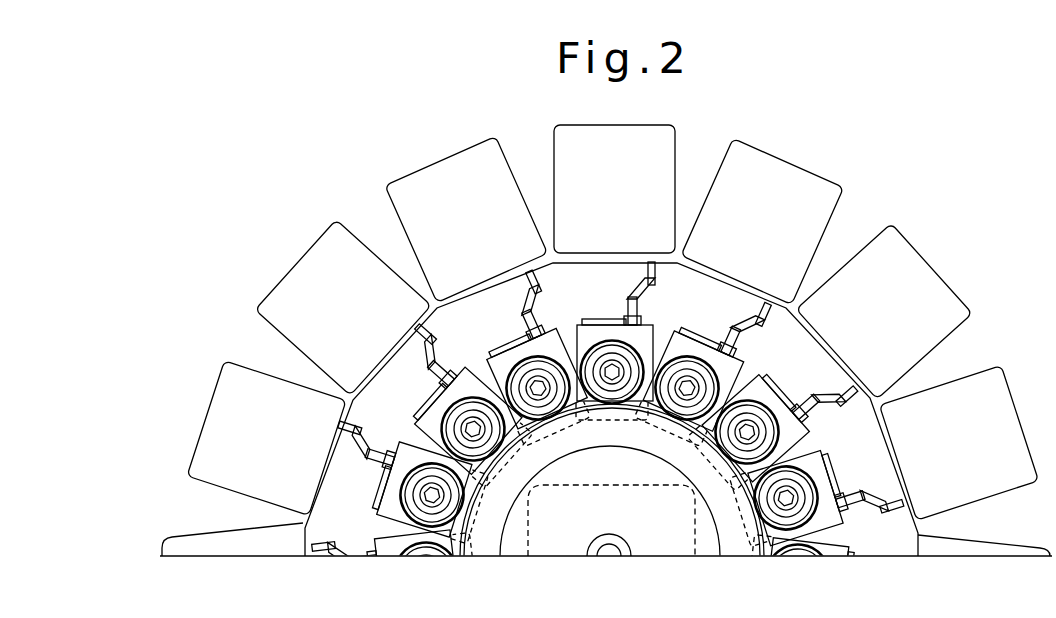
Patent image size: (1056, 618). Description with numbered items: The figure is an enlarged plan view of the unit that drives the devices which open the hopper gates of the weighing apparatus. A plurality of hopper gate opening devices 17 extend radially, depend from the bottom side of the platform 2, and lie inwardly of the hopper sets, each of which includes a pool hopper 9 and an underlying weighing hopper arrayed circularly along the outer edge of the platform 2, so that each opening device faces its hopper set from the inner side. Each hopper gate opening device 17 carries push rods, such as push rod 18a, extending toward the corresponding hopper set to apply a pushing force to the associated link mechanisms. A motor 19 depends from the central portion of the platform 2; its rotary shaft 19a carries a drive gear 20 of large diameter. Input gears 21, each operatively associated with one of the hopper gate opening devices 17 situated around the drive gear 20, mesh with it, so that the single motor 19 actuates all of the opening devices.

The platform 2 is at (884, 556).
The pool hopper 9 is at (808, 176).
The hopper gate opening device 17 is at (686, 313).
The push rod 18a is at (728, 338).
The motor 19 is at (527, 520).
The rotary shaft 19a is at (607, 560).
The drive gear 20 is at (743, 548).
The input gear 21 is at (730, 376).